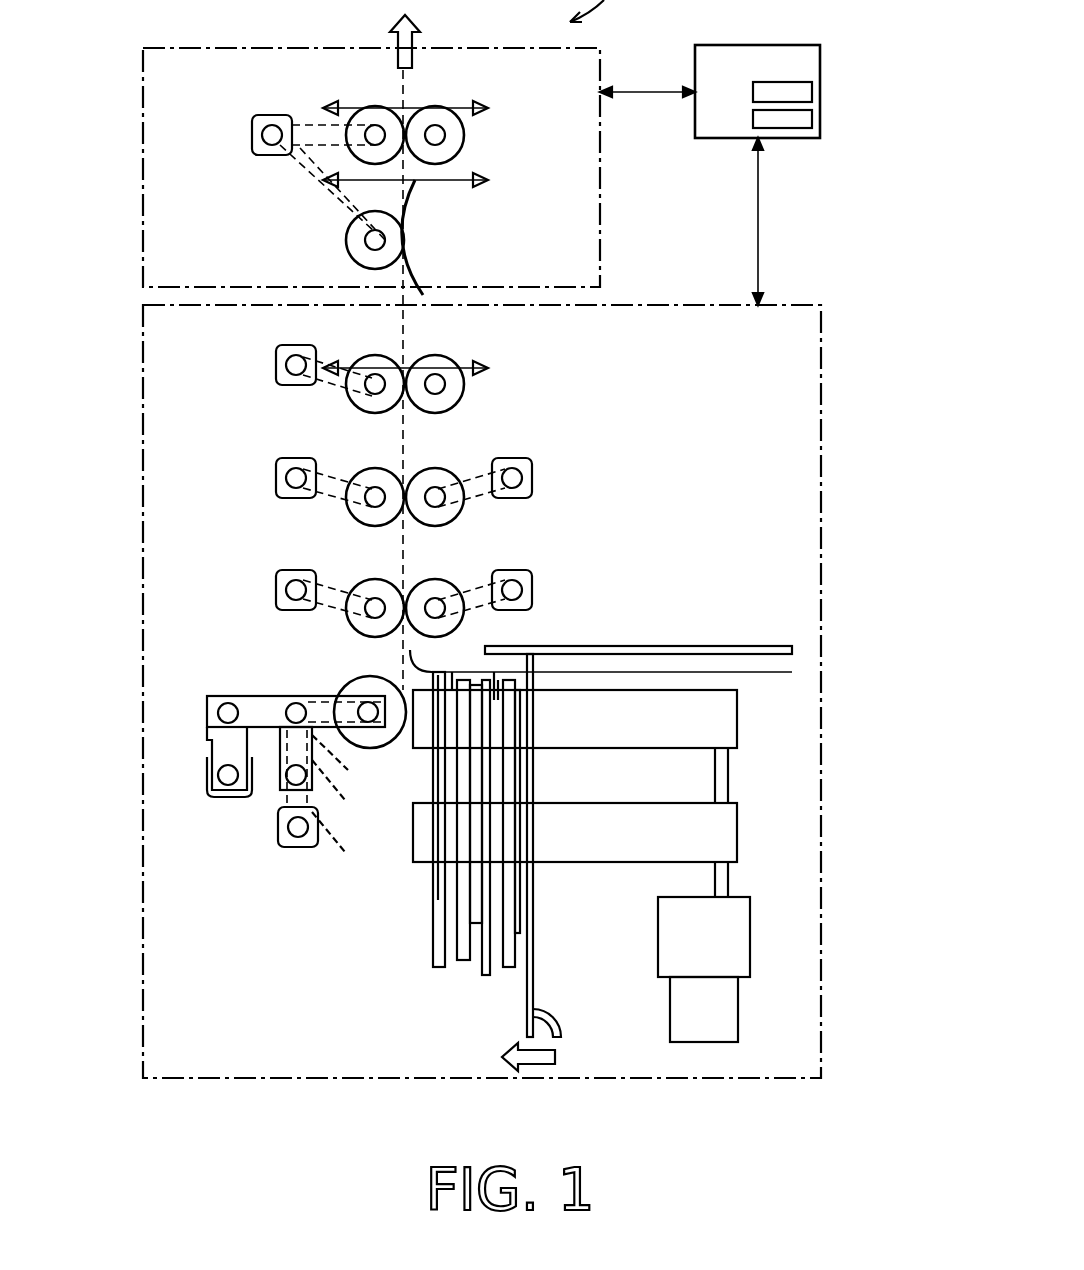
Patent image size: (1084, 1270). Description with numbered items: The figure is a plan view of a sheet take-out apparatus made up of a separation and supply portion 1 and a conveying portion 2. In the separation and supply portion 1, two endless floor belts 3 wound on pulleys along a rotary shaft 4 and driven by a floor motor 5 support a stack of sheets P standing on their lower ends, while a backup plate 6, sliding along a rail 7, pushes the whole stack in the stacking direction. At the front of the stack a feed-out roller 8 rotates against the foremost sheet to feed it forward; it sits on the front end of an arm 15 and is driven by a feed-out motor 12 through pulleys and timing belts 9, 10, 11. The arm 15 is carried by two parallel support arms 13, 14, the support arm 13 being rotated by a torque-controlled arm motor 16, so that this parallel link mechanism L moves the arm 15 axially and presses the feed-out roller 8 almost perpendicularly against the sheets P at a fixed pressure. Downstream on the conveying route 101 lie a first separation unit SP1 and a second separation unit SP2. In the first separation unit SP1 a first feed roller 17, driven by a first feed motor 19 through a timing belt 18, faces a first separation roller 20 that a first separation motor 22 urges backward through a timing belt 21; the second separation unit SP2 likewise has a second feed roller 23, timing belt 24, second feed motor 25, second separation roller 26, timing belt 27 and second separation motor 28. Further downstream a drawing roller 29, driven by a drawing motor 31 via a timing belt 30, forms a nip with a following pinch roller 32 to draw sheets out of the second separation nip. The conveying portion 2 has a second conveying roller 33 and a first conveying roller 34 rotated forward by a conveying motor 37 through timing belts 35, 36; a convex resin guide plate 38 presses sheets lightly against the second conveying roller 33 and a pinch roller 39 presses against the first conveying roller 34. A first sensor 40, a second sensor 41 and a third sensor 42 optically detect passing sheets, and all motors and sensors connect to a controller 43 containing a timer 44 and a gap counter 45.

The separation and supply portion 1 is at (143, 640).
The conveying portion 2 is at (143, 164).
The floor belts 3 is at (733, 743).
The rotary shaft 4 is at (728, 878).
The floor motor 5 is at (740, 936).
The backup plate 6 is at (536, 957).
The rail 7 is at (678, 645).
The feed-out roller 8 is at (373, 738).
The timing belt 9 is at (335, 843).
The timing belt 10 is at (343, 790).
The timing belt 11 is at (341, 761).
The feed-out motor 12 is at (300, 847).
The support arm 13 is at (212, 750).
The support arm 14 is at (288, 693).
The arm 15 is at (256, 695).
The arm motor 16 is at (228, 797).
The first feed roller 17 is at (375, 590).
The timing belt 18 is at (322, 610).
The first feed motor 19 is at (276, 581).
The first separation roller 20 is at (437, 590).
The timing belt 21 is at (490, 610).
The first separation motor 22 is at (532, 580).
The second feed roller 23 is at (375, 478).
The timing belt 24 is at (325, 500).
The second feed motor 25 is at (276, 468).
The second separation roller 26 is at (442, 476).
The timing belt 27 is at (483, 500).
The second separation motor 28 is at (532, 468).
The drawing roller 29 is at (375, 365).
The timing belt 30 is at (325, 386).
The drawing motor 31 is at (276, 355).
The pinch roller 32 is at (437, 365).
The second conveying roller 33 is at (350, 250).
The first conveying roller 34 is at (375, 116).
The timing belt 35 is at (307, 183).
The timing belt 36 is at (307, 118).
The conveying motor 37 is at (258, 124).
The guide plate 38 is at (412, 262).
The pinch roller 39 is at (436, 116).
The first sensor 40 is at (490, 370).
The second sensor 41 is at (490, 110).
The third sensor 42 is at (490, 182).
The controller 43 is at (757, 57).
The timer 44 is at (810, 92).
The gap counter 45 is at (810, 118).
The conveying route 101 is at (407, 460).
The first separation unit SP1 is at (538, 546).
The second separation unit SP2 is at (538, 435).
The parallel link mechanism L is at (184, 797).
The sheets P is at (427, 982).